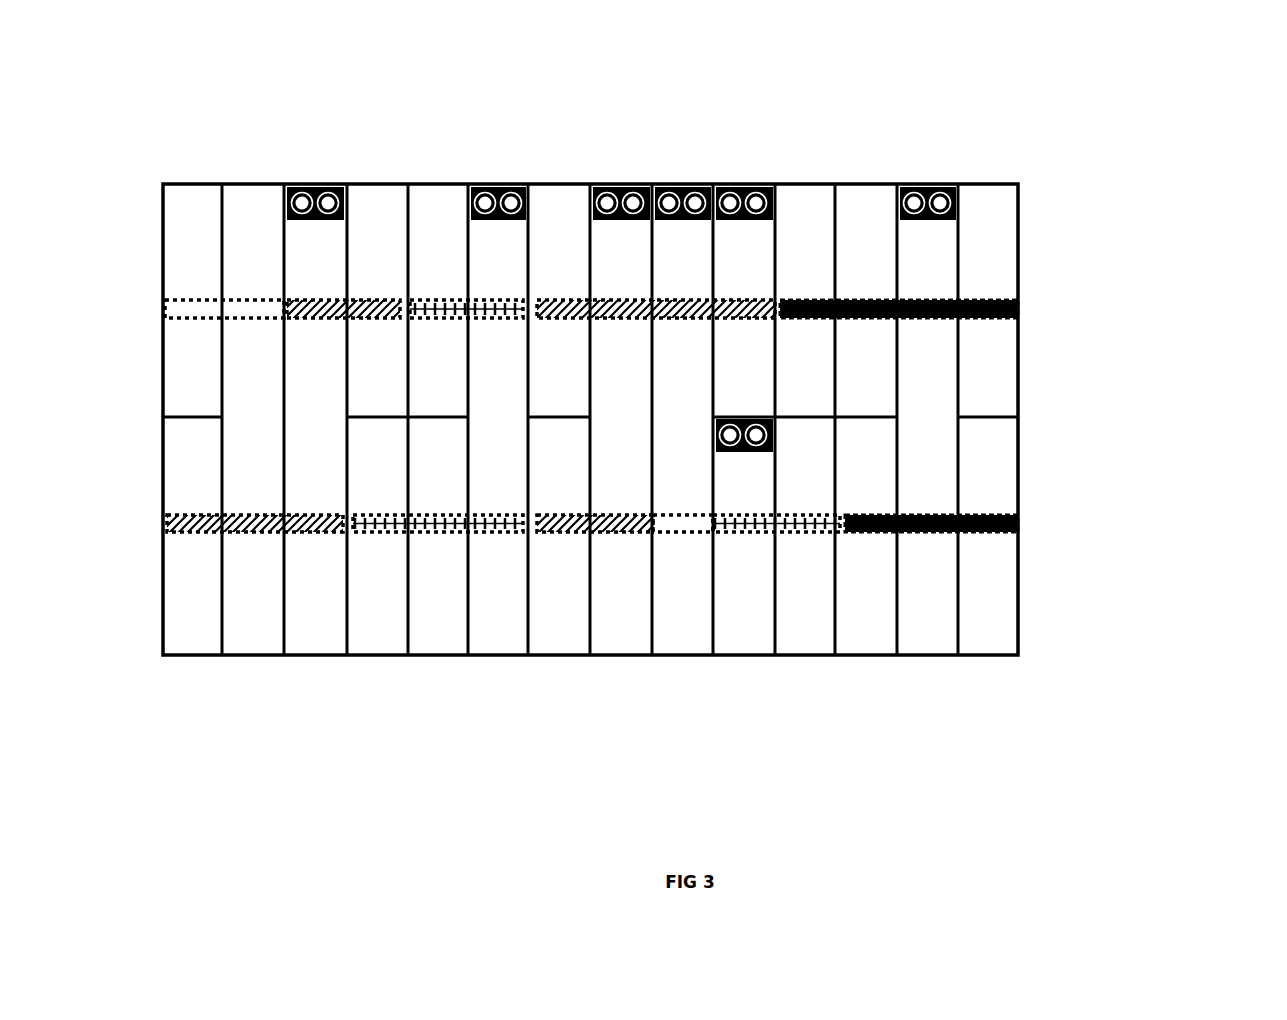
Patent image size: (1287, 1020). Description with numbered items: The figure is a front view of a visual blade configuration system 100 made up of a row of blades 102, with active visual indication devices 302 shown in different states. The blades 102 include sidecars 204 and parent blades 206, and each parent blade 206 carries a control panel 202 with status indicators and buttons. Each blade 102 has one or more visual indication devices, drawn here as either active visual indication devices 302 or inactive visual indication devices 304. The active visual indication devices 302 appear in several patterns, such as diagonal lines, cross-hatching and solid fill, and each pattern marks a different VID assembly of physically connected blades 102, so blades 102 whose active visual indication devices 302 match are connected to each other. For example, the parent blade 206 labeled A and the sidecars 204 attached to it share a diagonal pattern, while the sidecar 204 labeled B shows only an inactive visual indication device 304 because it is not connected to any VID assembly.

The visual blade configuration system 100 is at (1105, 178).
The blade 102 is at (749, 167).
The control panel 202 is at (675, 192).
The sidecar 204 is at (182, 380).
The parent blade 206 is at (732, 643).
The active visual indication device 302 is at (1020, 670).
The inactive visual indication device 304 is at (802, 688).